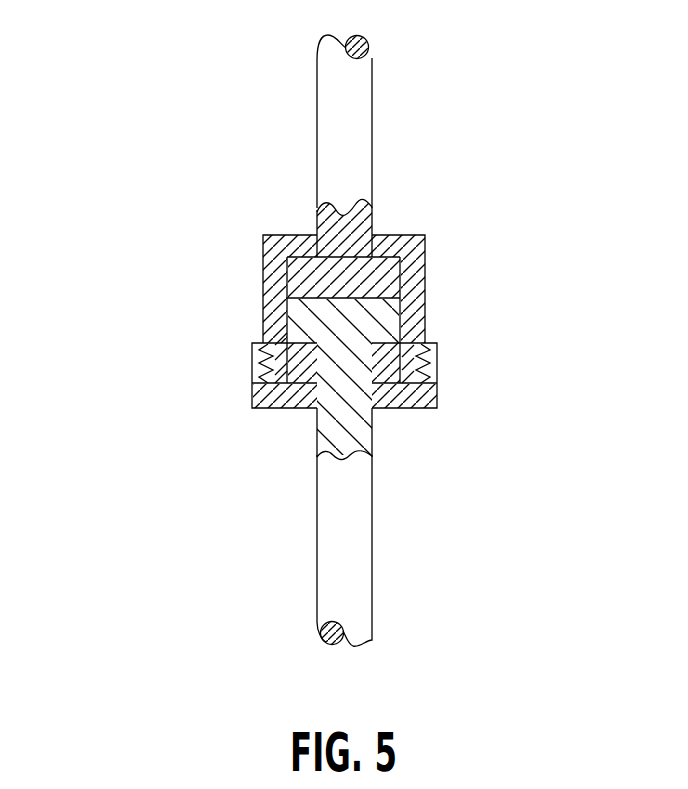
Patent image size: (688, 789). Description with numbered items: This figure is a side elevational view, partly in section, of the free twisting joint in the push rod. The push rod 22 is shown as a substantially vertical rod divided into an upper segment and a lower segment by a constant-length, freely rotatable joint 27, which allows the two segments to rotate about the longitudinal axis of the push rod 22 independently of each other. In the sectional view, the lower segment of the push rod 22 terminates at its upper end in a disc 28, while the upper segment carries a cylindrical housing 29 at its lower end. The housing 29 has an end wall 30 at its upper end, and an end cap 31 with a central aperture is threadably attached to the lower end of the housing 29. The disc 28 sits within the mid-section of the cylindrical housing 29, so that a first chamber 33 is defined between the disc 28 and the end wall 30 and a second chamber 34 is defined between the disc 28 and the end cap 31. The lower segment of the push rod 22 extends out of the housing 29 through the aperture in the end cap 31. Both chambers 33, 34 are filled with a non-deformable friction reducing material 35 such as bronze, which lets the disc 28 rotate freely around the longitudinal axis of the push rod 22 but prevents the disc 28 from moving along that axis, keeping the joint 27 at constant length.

The push rod 22 is at (368, 93).
The freely rotatable joint 27 is at (228, 235).
The disc 28 is at (322, 314).
The cylindrical housing 29 is at (416, 297).
The end wall 30 is at (284, 234).
The end cap 31 is at (277, 412).
The first chamber 33 is at (392, 272).
The second chamber 34 is at (388, 410).
The friction reducing material 35 is at (295, 273).